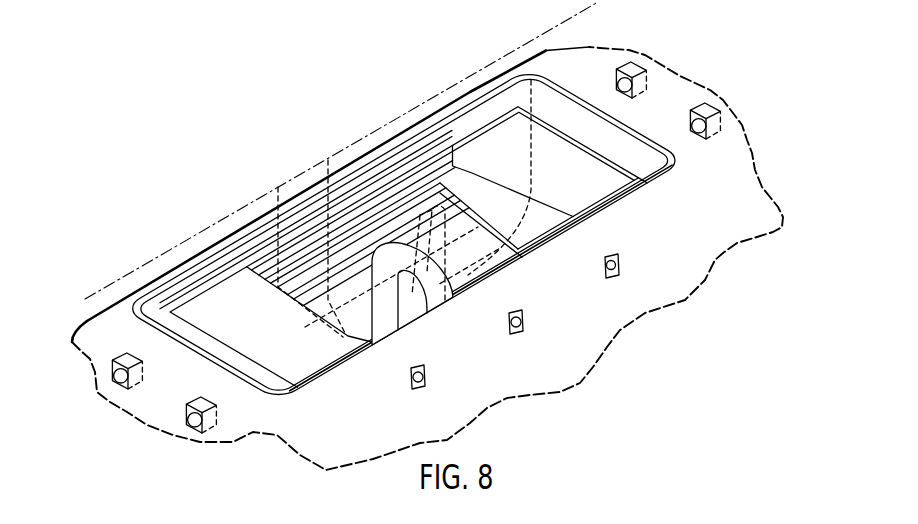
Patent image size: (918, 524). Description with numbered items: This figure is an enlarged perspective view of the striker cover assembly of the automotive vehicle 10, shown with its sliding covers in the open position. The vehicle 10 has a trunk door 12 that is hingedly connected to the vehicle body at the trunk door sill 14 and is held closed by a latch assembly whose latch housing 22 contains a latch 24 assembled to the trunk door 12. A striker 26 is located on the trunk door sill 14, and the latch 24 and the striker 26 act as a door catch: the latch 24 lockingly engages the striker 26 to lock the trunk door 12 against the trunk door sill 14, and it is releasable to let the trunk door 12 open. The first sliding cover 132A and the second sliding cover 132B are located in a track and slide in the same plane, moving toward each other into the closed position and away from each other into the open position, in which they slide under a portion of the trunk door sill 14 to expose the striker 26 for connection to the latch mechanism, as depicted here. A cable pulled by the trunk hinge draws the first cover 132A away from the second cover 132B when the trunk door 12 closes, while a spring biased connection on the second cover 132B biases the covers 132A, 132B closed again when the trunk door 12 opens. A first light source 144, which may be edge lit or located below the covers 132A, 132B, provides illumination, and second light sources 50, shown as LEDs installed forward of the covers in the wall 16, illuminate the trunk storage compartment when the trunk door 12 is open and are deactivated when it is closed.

The automotive vehicle 10 is at (153, 127).
The trunk door 12 is at (592, 2).
The trunk door sill 14 is at (559, 67).
The wall 16 is at (732, 183).
The latch housing 22 is at (280, 203).
The latch 24 is at (445, 300).
The striker 26 is at (392, 262).
The second light sources 50 is at (515, 332).
The first sliding cover 132A is at (498, 140).
The second sliding cover 132B is at (220, 300).
The first light source 144 is at (637, 62).